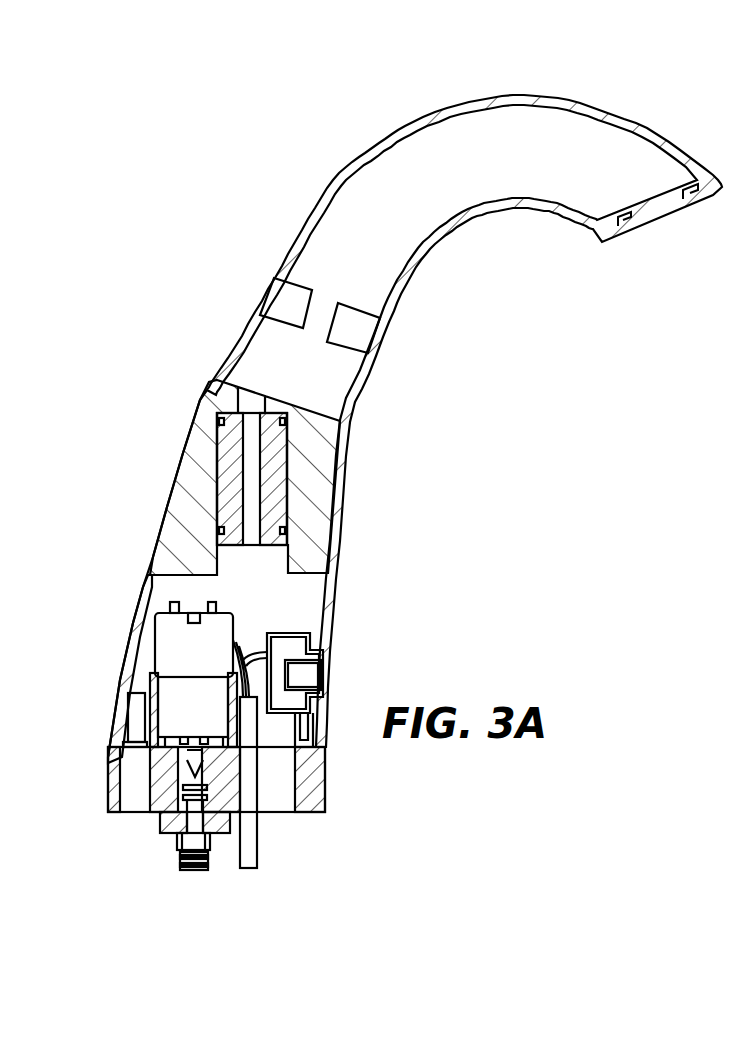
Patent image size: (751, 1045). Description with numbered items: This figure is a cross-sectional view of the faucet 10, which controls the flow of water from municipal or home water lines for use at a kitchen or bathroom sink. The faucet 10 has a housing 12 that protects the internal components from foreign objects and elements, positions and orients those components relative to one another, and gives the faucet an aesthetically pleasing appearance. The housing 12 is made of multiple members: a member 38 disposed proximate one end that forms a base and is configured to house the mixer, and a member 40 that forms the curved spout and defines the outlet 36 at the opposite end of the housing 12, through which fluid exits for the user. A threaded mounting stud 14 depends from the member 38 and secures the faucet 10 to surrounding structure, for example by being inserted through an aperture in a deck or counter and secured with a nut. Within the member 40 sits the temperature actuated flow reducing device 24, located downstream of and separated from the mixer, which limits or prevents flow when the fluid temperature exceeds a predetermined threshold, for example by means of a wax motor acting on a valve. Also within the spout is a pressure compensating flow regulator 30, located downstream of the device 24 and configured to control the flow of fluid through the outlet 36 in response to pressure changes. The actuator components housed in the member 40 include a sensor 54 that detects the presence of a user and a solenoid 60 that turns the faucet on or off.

The faucet 10 is at (284, 157).
The housing 12 is at (236, 336).
The mounting stud 14 is at (192, 872).
The temperature actuated flow reducing device 24 is at (306, 459).
The pressure compensating flow regulator 30 is at (275, 298).
The outlet 36 is at (644, 226).
The member 38 is at (322, 789).
The member 40 is at (204, 391).
The sensor 54 is at (325, 665).
The solenoid 60 is at (243, 611).